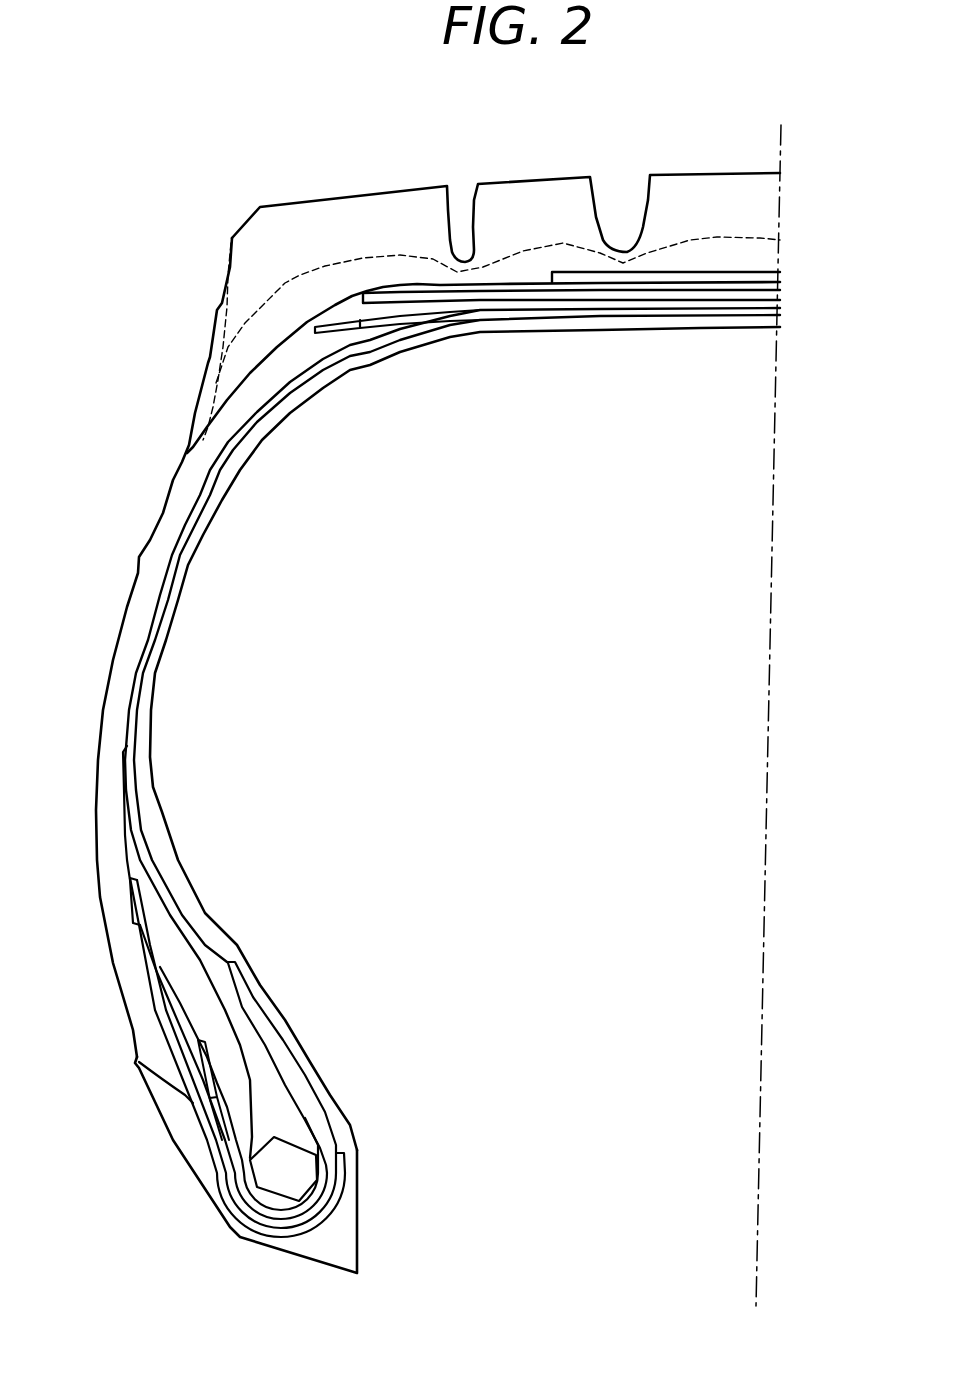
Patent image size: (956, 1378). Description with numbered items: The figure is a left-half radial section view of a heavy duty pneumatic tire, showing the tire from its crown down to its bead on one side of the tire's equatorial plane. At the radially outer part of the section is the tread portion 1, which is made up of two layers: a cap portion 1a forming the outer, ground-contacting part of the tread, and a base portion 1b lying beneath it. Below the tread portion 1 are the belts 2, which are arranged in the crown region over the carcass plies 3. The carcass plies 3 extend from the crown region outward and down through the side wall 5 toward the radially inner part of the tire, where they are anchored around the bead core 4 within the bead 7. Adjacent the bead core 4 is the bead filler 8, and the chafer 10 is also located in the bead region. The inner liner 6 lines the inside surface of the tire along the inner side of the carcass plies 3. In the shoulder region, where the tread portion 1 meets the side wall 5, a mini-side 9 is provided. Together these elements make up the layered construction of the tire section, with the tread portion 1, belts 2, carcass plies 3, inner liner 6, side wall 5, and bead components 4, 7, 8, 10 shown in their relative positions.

The tread portion 1 is at (353, 196).
The cap portion 1a is at (540, 203).
The base portion 1b is at (762, 258).
The belts 2 is at (397, 318).
The carcass plies 3 is at (248, 430).
The bead core 4 is at (303, 1173).
The side wall 5 is at (118, 651).
The inner liner 6 is at (170, 590).
The bead 7 is at (337, 1243).
The bead filler 8 is at (270, 1090).
The mini-side 9 is at (212, 360).
The chafer 10 is at (262, 1235).